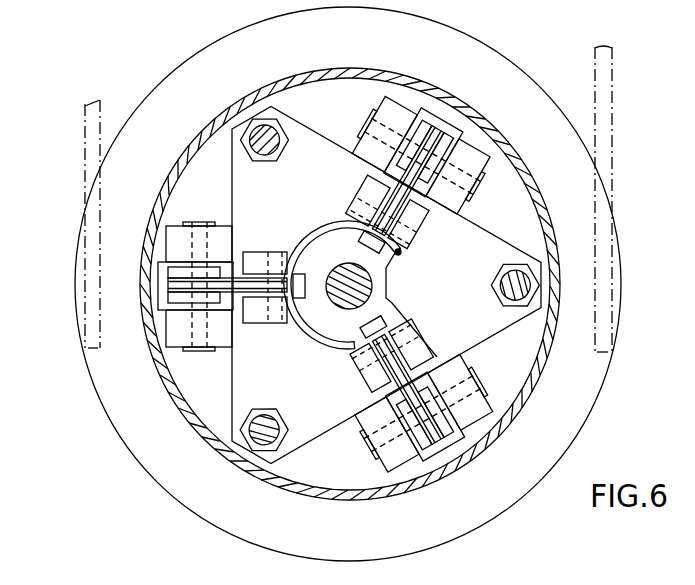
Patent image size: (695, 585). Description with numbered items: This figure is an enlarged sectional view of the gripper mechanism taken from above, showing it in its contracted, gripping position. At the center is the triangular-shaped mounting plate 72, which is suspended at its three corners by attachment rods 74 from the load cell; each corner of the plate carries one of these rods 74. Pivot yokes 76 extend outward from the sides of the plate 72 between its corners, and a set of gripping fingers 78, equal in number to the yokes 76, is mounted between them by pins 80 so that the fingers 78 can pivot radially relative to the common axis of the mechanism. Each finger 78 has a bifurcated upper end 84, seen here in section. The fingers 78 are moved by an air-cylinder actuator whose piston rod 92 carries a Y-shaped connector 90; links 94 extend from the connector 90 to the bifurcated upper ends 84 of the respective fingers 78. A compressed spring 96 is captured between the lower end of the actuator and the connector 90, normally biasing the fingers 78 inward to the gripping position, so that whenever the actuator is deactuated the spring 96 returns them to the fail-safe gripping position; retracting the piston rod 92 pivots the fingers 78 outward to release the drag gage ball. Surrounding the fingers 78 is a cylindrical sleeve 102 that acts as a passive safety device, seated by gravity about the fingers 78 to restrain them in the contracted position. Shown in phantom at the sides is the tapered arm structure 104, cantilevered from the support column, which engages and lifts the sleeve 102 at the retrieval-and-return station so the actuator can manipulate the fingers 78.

The mounting plate 72 is at (291, 381).
The attachment rods 74 is at (268, 156).
The pivot yokes 76 is at (165, 338).
The gripping fingers 78 is at (160, 303).
The pins 80 is at (207, 352).
The bifurcated upper end 84 is at (160, 271).
The Y-shaped connector 90 is at (318, 312).
The piston rod 92 is at (372, 283).
The links 94 is at (241, 262).
The compressed spring 96 is at (314, 228).
The cylindrical sleeve 102 is at (196, 436).
The tapered arm structure 104 is at (86, 126).